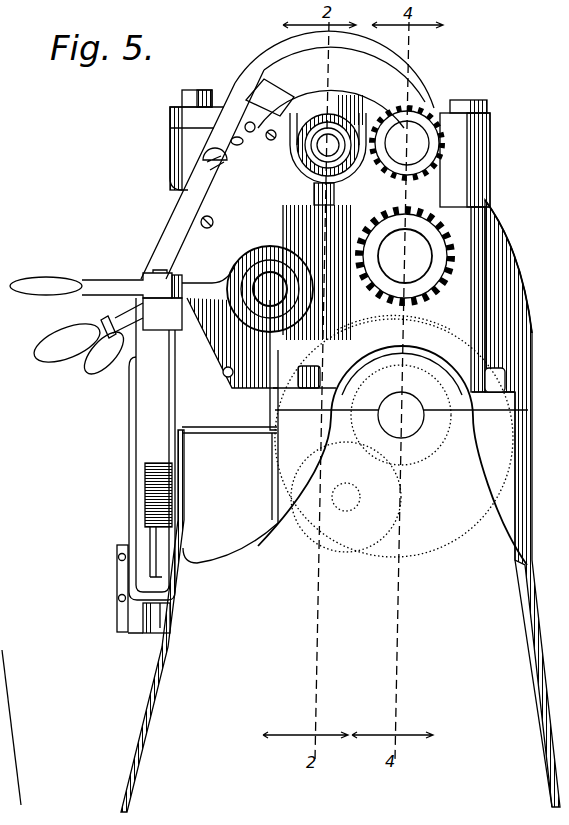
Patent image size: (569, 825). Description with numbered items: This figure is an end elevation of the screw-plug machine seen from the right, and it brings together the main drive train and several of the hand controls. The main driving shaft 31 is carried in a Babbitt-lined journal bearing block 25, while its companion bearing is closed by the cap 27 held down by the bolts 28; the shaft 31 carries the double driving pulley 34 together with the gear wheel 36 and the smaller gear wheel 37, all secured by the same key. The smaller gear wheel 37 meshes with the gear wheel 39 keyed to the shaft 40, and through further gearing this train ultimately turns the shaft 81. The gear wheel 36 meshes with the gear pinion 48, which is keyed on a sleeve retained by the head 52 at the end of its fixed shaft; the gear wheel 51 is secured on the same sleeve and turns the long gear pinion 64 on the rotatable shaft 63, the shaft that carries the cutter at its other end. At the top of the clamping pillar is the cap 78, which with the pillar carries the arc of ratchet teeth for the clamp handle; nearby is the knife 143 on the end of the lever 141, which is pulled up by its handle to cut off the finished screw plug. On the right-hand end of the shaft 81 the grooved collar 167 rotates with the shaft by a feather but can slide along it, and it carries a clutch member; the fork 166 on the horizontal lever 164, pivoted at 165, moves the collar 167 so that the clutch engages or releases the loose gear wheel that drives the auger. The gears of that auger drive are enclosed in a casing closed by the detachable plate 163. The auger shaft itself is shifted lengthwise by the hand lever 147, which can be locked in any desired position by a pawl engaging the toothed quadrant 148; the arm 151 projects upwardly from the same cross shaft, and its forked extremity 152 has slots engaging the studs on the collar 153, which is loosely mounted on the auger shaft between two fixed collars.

The cap 78 is at (268, 50).
The knife 143 is at (266, 88).
The collar 153 is at (394, 74).
The long gear pinion 64 is at (432, 106).
The rotatable shaft 63 is at (428, 143).
The gear pinion 48 is at (478, 230).
The gear wheel 51 is at (486, 242).
The gear wheel 36 is at (520, 300).
The bolts 28 is at (505, 372).
The cap 27 is at (432, 367).
The double driving pulley 34 is at (394, 322).
The head 52 is at (405, 256).
The shaft 31 is at (401, 415).
The shaft 40 is at (347, 482).
The journal bearing block 25 is at (446, 480).
The gear wheel 37 is at (422, 468).
The gear wheel 39 is at (371, 552).
The lever 141 is at (163, 243).
The horizontal lever 164 is at (64, 281).
The pivot 165 is at (155, 283).
The detachable plate 163 is at (235, 188).
The forked extremity 152 is at (289, 163).
The fork 166 is at (226, 216).
The grooved collar 167 is at (310, 232).
The shaft 81 is at (266, 284).
The arm 151 is at (228, 374).
The toothed quadrant 148 is at (135, 423).
The lever 147 is at (157, 550).